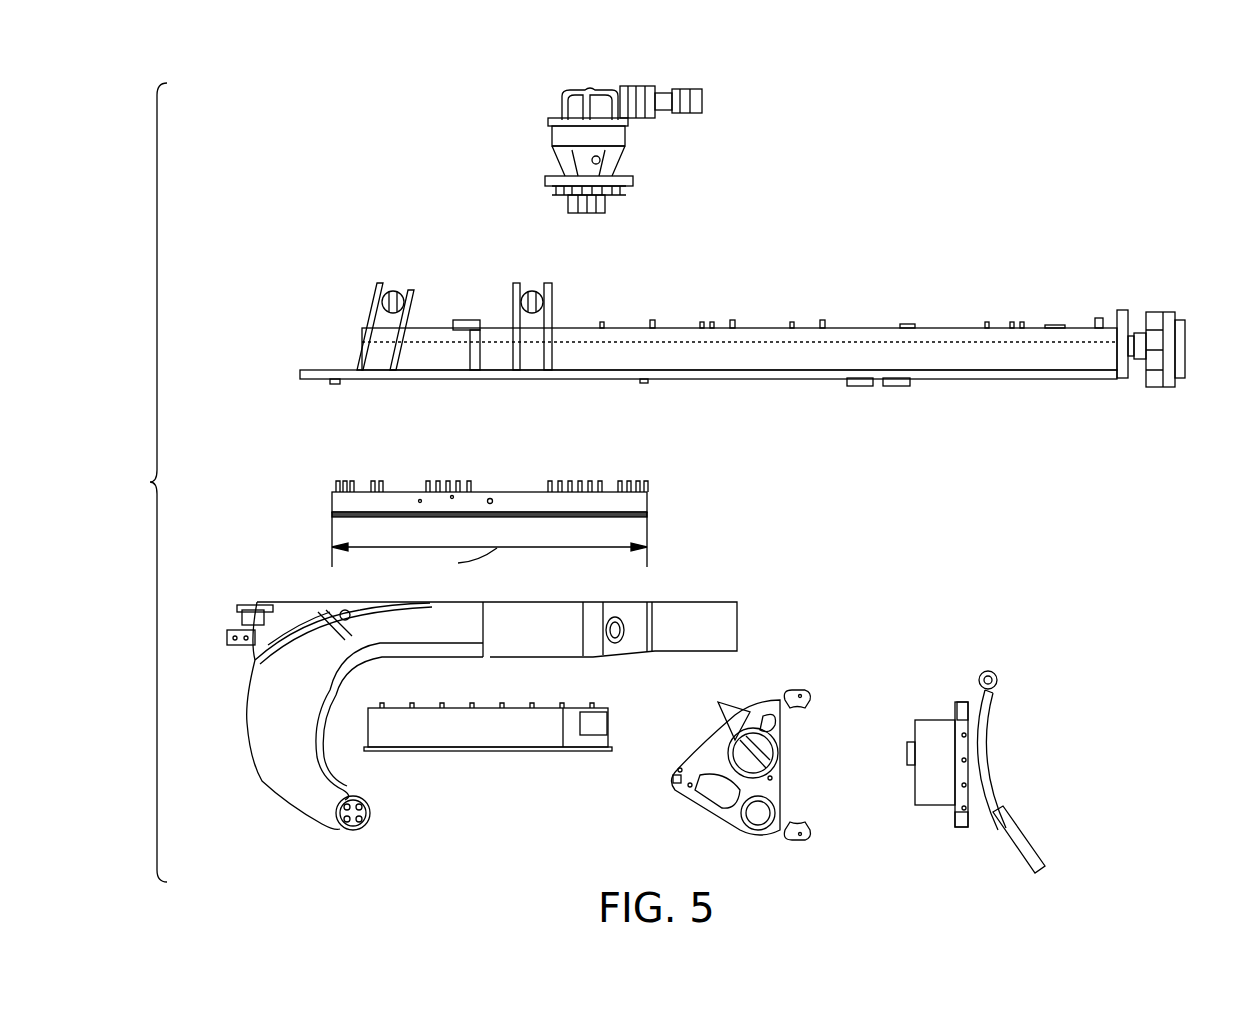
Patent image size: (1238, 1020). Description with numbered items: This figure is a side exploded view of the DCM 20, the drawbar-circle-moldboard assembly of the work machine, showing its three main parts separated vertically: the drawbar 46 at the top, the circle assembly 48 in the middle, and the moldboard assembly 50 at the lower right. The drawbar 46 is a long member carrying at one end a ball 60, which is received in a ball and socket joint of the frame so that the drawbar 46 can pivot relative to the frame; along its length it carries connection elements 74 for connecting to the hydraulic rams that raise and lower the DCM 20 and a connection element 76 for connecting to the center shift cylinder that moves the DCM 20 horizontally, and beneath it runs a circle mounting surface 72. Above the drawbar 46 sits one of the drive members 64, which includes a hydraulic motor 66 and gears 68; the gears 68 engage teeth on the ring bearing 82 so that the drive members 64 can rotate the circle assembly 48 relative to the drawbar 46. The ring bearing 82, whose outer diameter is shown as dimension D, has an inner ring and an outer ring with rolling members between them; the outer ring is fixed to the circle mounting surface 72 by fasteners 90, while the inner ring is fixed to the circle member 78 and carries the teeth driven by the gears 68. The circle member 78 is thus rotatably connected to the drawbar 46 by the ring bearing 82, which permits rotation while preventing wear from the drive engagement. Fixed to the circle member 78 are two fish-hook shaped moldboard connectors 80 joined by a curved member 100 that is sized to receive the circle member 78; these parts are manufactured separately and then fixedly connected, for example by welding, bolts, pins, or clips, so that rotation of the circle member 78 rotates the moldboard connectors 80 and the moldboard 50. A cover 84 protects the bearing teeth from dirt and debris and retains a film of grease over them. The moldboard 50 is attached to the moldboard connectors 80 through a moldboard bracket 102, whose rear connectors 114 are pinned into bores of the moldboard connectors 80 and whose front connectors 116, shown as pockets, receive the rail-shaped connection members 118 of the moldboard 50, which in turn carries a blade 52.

The DCM 20 is at (140, 482).
The drawbar 46 is at (1003, 385).
The circle assembly 48 is at (477, 496).
The moldboard assembly 50 is at (1004, 767).
The blade 52 is at (1040, 867).
The ball 60 is at (1162, 310).
The drive member 64 is at (608, 78).
The hydraulic motor 66 is at (686, 76).
The gears 68 is at (614, 206).
The circle mounting surface 72 is at (318, 368).
The connection elements 74 is at (395, 280).
The connection element 76 is at (535, 280).
The circle member 78 is at (290, 604).
The moldboard connectors 80 is at (298, 786).
The ring bearing 82 is at (660, 505).
The cover 84 is at (495, 742).
The fasteners 90 is at (652, 472).
The curved member 100 is at (722, 620).
The moldboard bracket 102 is at (764, 737).
The rear connectors 114 is at (678, 788).
The front connectors 116 is at (816, 697).
The connection members 118 is at (961, 702).